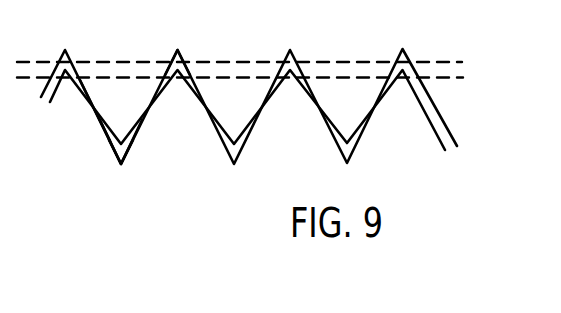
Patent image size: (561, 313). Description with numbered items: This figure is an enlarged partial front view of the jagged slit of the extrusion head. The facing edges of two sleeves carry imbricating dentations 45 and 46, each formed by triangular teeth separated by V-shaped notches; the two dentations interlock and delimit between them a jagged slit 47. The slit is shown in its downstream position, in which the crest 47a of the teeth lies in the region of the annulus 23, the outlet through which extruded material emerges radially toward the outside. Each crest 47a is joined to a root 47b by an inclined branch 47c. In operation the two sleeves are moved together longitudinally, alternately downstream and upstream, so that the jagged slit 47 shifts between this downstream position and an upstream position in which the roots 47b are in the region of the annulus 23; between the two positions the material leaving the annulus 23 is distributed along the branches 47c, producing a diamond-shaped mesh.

The annulus 23 is at (68, 55).
The dentation 45 is at (118, 108).
The dentation 46 is at (177, 95).
The jagged slit 47 is at (266, 128).
The crest 47a is at (181, 50).
The root 47b is at (121, 150).
The branch 47c is at (97, 114).